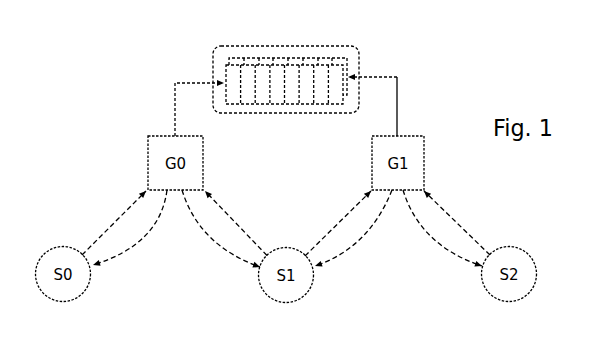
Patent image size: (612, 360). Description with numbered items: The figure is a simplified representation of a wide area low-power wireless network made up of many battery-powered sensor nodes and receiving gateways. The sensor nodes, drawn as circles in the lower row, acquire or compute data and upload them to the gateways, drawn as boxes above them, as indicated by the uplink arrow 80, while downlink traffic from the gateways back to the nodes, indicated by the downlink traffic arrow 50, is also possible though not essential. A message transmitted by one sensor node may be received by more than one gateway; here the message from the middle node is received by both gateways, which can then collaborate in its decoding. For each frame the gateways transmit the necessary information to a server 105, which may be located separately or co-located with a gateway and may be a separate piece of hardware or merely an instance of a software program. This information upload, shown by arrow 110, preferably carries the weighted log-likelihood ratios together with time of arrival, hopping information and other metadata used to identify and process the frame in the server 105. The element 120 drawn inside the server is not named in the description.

The downlink traffic arrow 50 is at (430, 242).
The uplink arrow 80 is at (115, 220).
The server 105 is at (358, 57).
The information upload arrow 110 is at (175, 108).
The battery cells 120 is at (297, 57).